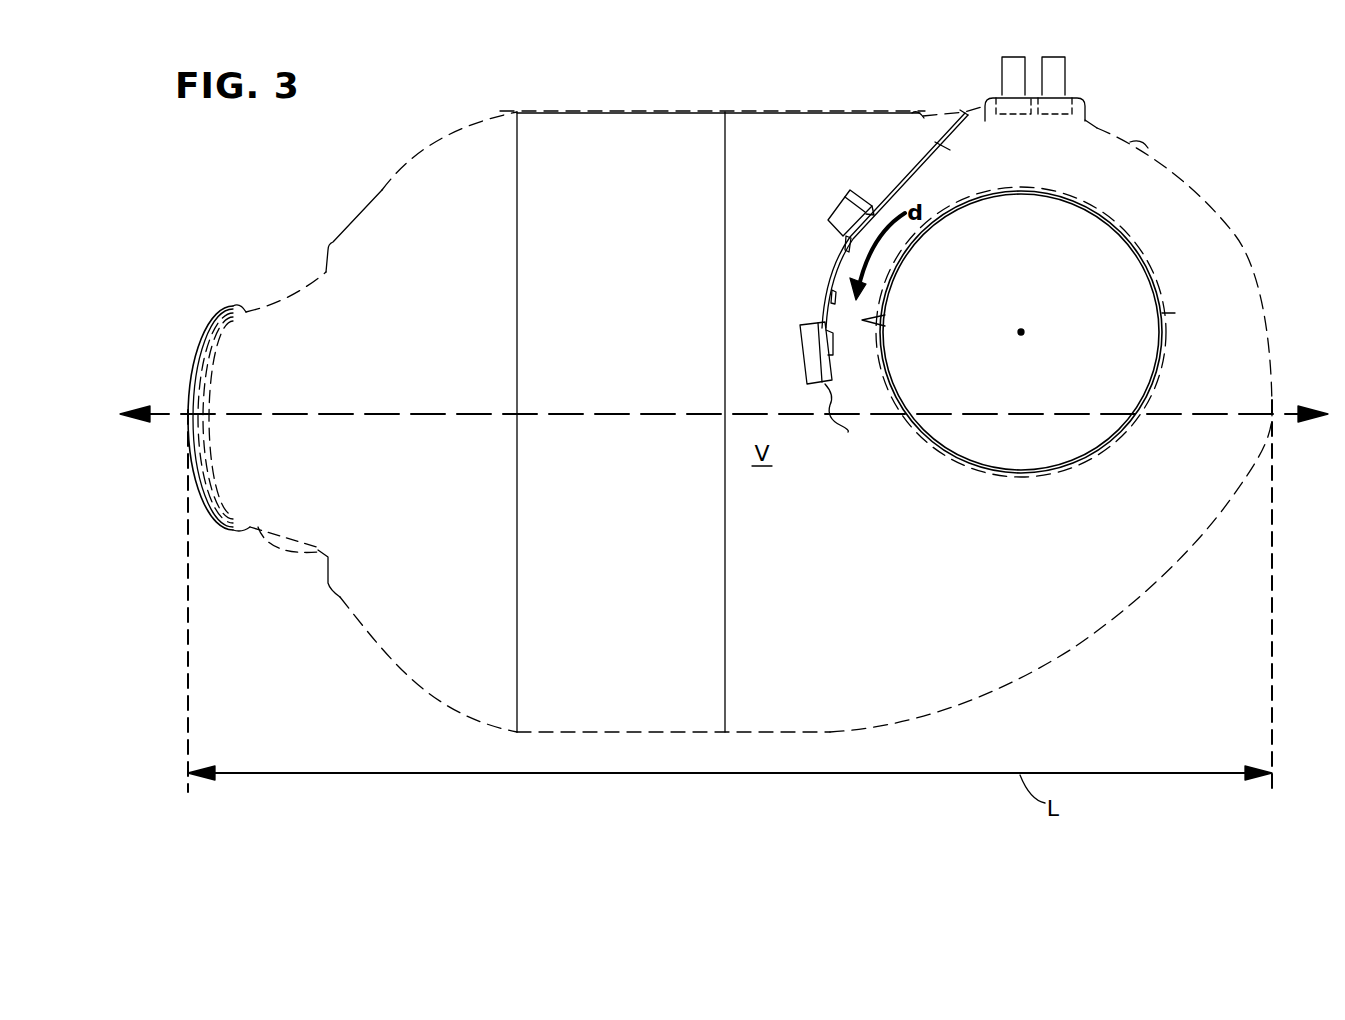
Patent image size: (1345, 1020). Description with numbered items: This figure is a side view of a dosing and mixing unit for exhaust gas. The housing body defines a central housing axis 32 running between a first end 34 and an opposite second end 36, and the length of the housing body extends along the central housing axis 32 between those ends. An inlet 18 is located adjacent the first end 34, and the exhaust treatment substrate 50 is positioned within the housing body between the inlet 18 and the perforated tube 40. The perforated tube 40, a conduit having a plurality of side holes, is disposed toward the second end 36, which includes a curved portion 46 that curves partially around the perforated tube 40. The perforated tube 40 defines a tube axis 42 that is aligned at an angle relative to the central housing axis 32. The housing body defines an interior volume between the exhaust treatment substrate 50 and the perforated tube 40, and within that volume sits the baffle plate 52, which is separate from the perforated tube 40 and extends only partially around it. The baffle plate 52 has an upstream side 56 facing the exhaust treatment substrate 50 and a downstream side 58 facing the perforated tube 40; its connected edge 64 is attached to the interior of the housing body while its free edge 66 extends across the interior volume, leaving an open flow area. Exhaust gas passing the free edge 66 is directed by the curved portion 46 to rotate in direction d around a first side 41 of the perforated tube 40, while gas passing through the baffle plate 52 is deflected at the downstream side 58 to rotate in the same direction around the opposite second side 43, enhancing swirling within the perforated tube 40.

The inlet 18 is at (200, 345).
The central housing axis 32 is at (1290, 418).
The first end 34 is at (328, 262).
The second end 36 is at (1263, 298).
The perforated tube 40 is at (1080, 462).
The first side 41 is at (1162, 313).
The tube axis 42 is at (1021, 332).
The second side 43 is at (885, 322).
The curved portion 46 is at (1218, 208).
The exhaust treatment substrate 50 is at (566, 127).
The baffle plate 52 is at (893, 178).
The upstream side 56 is at (838, 255).
The downstream side 58 is at (938, 142).
The connected edge 64 is at (965, 111).
The free edge 66 is at (850, 415).